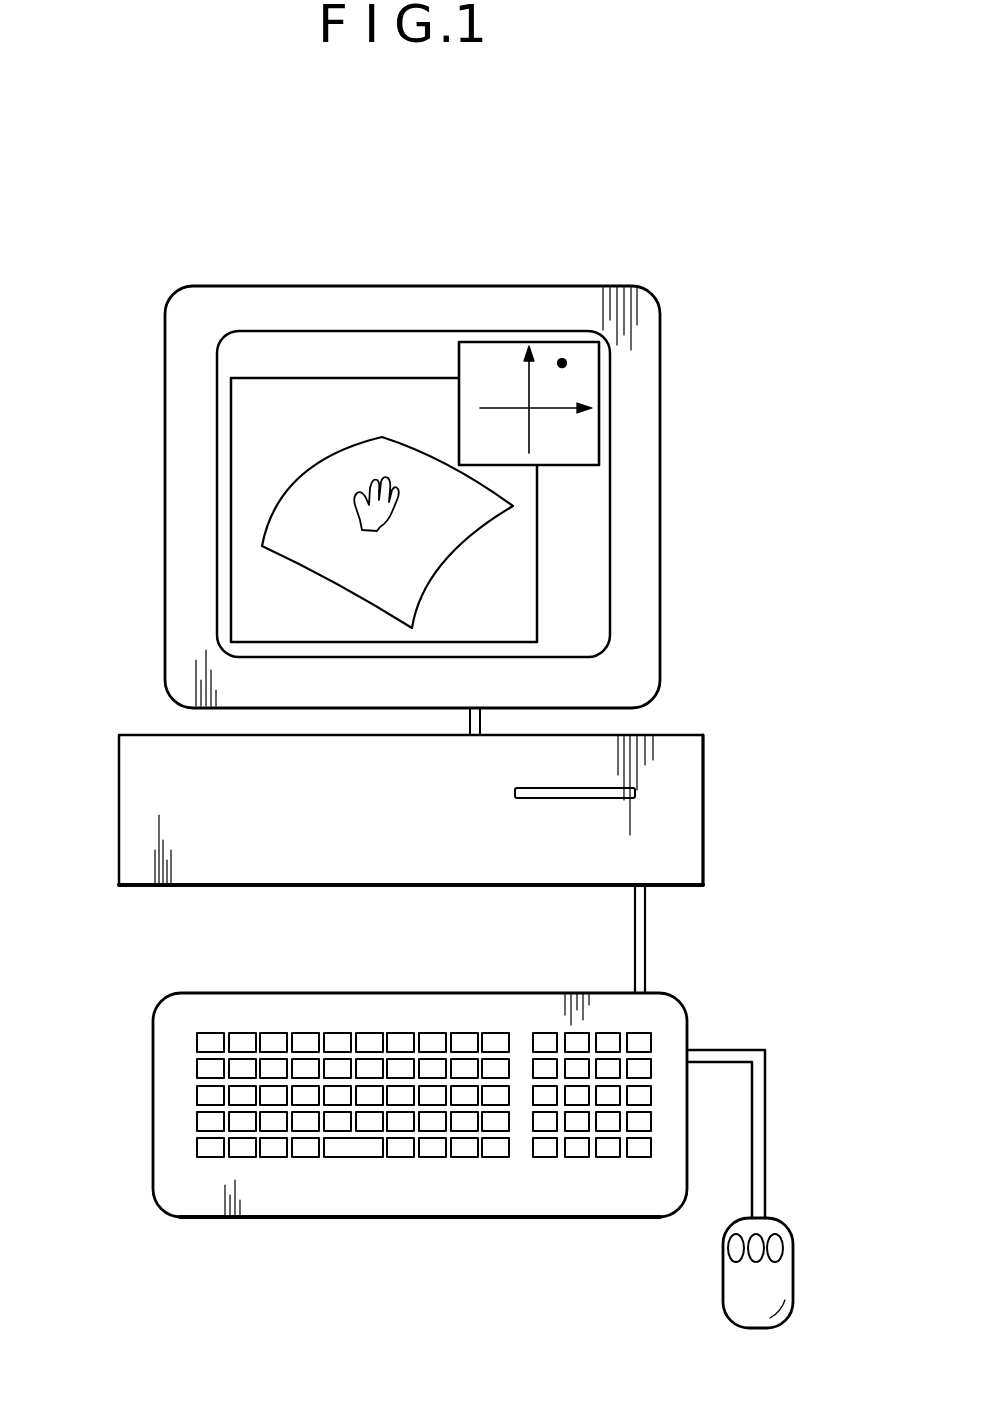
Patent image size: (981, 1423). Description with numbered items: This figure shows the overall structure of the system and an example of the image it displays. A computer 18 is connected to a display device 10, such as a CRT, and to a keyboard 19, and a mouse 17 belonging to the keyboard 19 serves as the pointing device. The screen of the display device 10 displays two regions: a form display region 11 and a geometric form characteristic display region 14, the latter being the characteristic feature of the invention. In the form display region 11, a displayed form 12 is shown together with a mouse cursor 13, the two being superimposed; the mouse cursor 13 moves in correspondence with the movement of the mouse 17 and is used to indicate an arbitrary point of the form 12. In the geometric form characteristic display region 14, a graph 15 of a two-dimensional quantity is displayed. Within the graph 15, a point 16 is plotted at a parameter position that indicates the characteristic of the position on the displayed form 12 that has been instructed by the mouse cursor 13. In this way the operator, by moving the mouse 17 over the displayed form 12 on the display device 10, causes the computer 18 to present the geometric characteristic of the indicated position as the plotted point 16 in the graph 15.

The display device 10 is at (184, 286).
The form display region 11 is at (315, 378).
The displayed form 12 is at (478, 527).
The mouse cursor 13 is at (258, 548).
The geometric form characteristic display region 14 is at (560, 342).
The graph 15 is at (581, 415).
The point 16 is at (567, 361).
The mouse 17 is at (723, 1266).
The computer 18 is at (200, 888).
The keyboard 19 is at (375, 992).